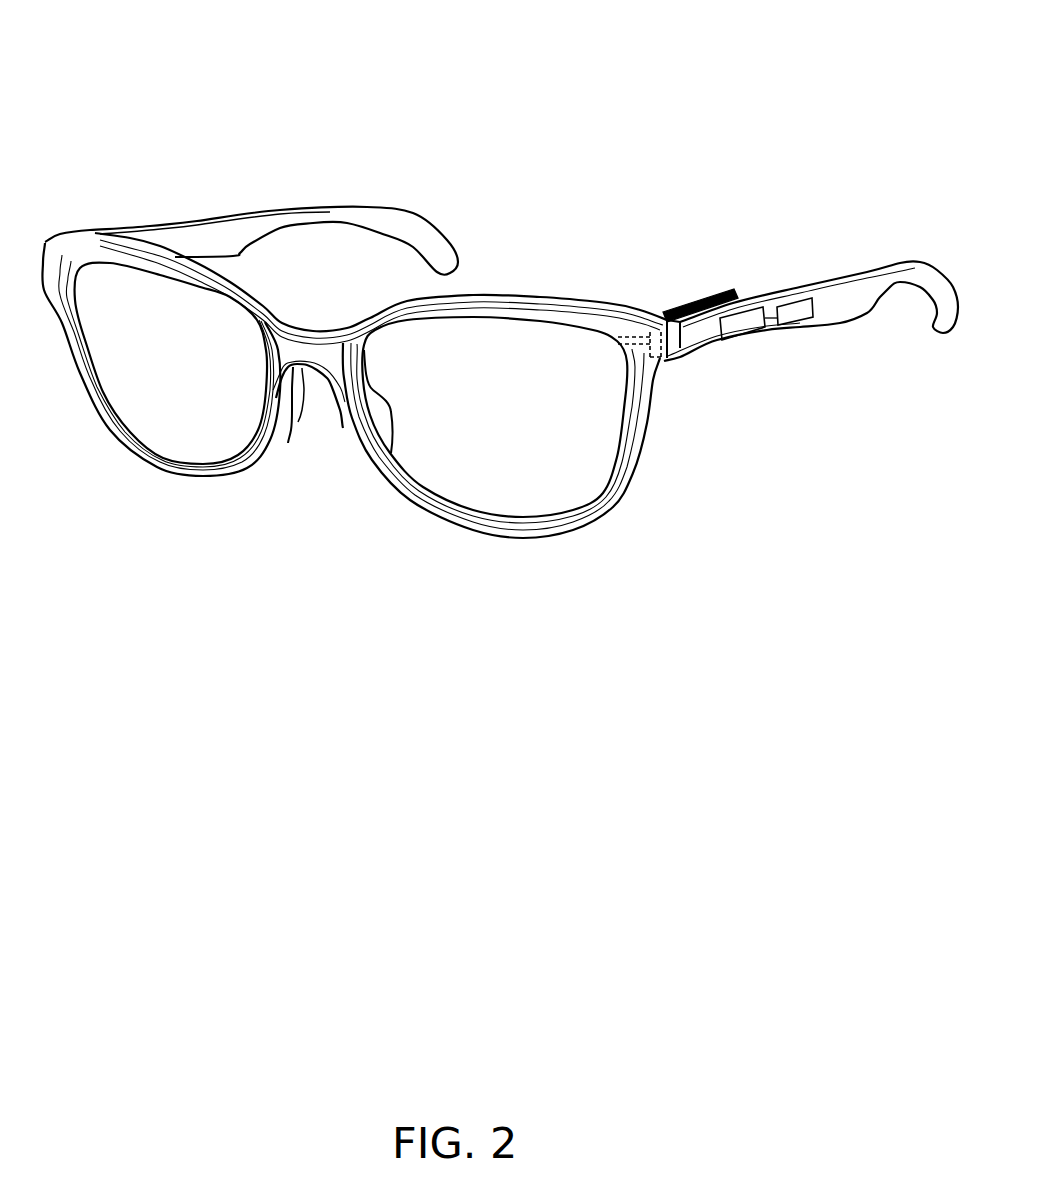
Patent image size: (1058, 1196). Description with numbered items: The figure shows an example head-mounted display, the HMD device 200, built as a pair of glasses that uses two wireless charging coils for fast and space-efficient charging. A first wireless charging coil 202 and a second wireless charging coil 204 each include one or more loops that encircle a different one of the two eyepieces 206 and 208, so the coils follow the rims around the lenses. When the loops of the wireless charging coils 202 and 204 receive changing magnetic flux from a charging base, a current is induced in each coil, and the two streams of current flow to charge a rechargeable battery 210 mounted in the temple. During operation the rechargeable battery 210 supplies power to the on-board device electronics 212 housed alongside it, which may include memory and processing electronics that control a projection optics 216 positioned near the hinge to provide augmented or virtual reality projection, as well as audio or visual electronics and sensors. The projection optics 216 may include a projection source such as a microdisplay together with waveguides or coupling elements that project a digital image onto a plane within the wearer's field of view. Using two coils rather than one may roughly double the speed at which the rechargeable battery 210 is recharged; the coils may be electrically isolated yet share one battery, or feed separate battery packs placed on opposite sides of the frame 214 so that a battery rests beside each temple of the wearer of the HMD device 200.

The HMD device 200 is at (606, 95).
The wireless charging coil 202 is at (278, 342).
The wireless charging coil 204 is at (595, 332).
The eyepiece 206 is at (196, 396).
The eyepiece 208 is at (523, 427).
The rechargeable battery 210 is at (800, 320).
The on-board device electronics 212 is at (740, 330).
The frame 214 is at (288, 443).
The projection optics 216 is at (693, 300).